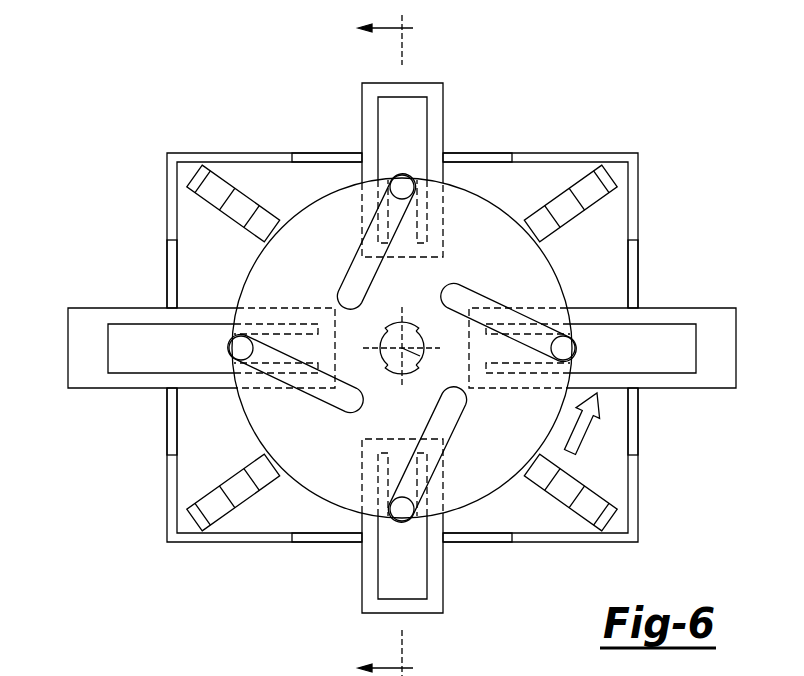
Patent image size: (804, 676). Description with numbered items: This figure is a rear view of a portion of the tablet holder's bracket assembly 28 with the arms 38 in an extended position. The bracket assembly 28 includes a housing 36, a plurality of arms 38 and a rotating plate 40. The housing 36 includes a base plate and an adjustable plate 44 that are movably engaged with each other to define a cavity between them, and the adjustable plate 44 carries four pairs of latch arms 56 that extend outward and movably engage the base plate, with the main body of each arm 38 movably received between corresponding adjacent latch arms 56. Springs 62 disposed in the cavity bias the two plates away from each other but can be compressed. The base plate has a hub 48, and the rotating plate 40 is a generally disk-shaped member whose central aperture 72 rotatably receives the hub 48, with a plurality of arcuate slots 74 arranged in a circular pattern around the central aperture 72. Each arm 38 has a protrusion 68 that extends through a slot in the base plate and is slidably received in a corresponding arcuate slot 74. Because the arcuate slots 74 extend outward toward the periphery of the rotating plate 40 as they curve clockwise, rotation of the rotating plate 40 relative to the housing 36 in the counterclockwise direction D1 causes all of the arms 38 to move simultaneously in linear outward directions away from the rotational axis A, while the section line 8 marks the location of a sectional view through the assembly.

The bracket assembly 28 is at (138, 86).
The housing 36 is at (632, 142).
The adjustable plate 44 is at (545, 153).
The latch arms 56 is at (327, 155).
The arms 38 is at (355, 87).
The rotating plate 40 is at (244, 256).
The springs 62 is at (230, 190).
The hub 48 is at (407, 326).
The central aperture 72 is at (387, 366).
The rotational axis A is at (427, 365).
The protrusion 68 is at (402, 178).
The arcuate slots 74 is at (337, 277).
The counterclockwise direction D1 is at (583, 438).
The section line 8- 8 is at (399, 342).